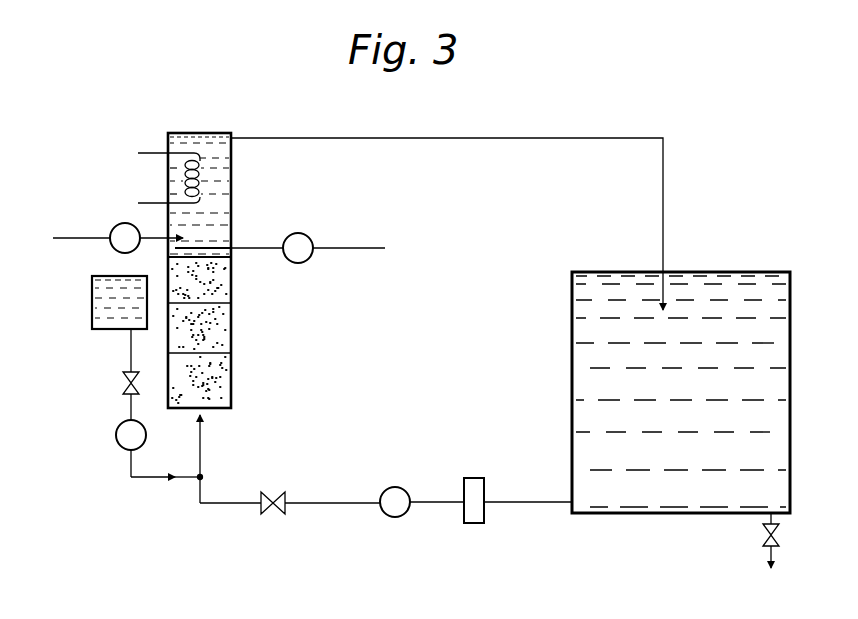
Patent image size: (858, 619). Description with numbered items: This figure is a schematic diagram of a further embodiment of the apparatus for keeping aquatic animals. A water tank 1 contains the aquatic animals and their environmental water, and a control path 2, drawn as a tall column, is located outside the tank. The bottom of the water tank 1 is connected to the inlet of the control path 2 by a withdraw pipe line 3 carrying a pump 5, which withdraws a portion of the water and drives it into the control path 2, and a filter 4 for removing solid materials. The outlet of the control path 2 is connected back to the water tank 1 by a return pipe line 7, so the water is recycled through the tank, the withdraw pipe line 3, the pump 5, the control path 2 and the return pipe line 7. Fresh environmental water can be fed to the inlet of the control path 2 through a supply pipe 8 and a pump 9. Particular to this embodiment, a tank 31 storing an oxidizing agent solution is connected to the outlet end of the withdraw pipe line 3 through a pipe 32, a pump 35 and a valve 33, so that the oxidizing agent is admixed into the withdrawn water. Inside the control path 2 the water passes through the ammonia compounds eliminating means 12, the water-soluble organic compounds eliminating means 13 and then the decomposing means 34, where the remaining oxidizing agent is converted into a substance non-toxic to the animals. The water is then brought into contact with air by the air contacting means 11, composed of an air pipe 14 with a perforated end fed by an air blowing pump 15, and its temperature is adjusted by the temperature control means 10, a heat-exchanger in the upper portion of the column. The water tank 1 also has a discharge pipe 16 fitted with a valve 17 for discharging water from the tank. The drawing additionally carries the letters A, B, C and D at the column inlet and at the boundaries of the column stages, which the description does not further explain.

The water tank 1 is at (780, 385).
The control path 2 is at (240, 325).
The withdraw pipe line 3 is at (433, 505).
The filter 4 is at (478, 510).
The pump 5 is at (390, 518).
The return pipe line 7 is at (488, 138).
The supply pipe 8 is at (151, 241).
The pump 9 is at (114, 228).
The temperature control means 10 is at (199, 180).
The air contacting means 11 is at (198, 248).
The ammonia compounds eliminating means 12 is at (225, 385).
The water-soluble organic compounds eliminating means 13 is at (218, 340).
The air pipe 14 is at (270, 247).
The air blowing pump 15 is at (312, 240).
The discharge pipe 16 is at (273, 515).
The valve 17 is at (762, 535).
The tank 31 is at (96, 308).
The pipe 32 is at (130, 344).
The valve 33 is at (122, 383).
The decomposing means 34 is at (218, 288).
The pump 35 is at (116, 437).
The zone A is at (205, 428).
The zone B is at (231, 355).
The zone C is at (231, 303).
The zone D is at (231, 260).